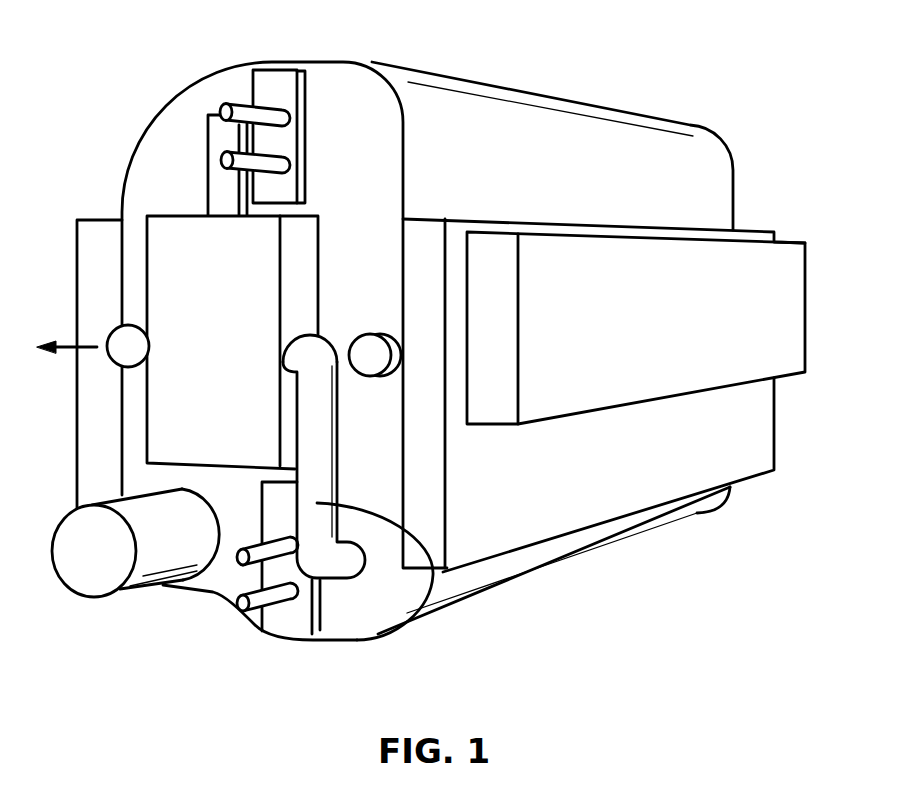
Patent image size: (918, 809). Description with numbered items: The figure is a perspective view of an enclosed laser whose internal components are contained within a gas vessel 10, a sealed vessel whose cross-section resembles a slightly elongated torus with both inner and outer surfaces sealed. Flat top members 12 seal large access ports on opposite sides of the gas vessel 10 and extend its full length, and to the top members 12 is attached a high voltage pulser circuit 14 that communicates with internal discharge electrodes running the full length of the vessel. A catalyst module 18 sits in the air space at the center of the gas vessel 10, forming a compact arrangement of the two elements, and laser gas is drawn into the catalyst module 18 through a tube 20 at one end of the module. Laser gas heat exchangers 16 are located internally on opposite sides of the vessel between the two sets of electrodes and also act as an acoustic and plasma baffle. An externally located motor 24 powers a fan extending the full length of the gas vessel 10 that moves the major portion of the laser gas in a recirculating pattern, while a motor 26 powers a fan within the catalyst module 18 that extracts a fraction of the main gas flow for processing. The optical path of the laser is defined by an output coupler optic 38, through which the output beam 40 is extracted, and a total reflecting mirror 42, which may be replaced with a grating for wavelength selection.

The gas vessel 10 is at (520, 120).
The top members 12 is at (82, 452).
The high voltage pulser circuit 14 is at (778, 262).
The laser gas heat exchangers 16 is at (277, 83).
The catalyst module 18 is at (175, 228).
The tube 20 is at (435, 570).
The motor 24 is at (83, 572).
The motor 26 is at (217, 140).
The output coupler optic 38 is at (128, 337).
The output beam 40 is at (72, 348).
The total reflecting mirror 42 is at (367, 343).